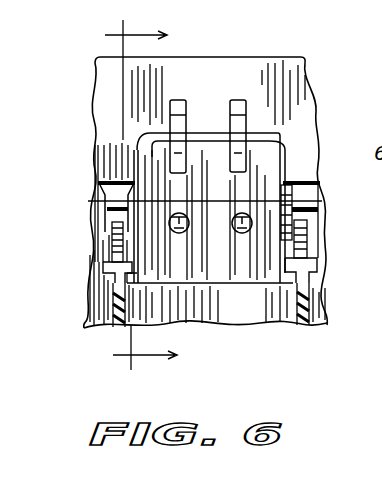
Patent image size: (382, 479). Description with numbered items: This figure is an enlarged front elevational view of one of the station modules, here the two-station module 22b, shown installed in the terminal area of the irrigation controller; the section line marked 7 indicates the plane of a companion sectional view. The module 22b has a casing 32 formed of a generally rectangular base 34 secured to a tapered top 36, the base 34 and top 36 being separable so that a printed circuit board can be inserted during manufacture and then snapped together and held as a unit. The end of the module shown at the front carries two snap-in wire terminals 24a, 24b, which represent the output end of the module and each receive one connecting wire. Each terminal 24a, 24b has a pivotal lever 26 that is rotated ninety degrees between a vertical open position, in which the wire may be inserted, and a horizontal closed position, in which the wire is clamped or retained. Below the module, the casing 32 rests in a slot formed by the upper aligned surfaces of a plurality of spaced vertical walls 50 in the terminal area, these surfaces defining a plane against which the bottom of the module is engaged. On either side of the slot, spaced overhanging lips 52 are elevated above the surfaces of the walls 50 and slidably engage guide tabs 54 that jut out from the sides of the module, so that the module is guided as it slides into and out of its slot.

The section line 7- 7 is at (122, 195).
The two-station module 22b is at (268, 172).
The snap-in wire terminal 24a is at (172, 231).
The snap-in wire terminal 24b is at (251, 219).
The pivotal lever 26 is at (238, 100).
The casing 32 is at (208, 258).
The base 34 is at (154, 272).
The tapered top 36 is at (268, 140).
The vertical walls 50 is at (270, 311).
The overhanging lips 52 is at (303, 235).
The guide tabs 54 is at (318, 272).